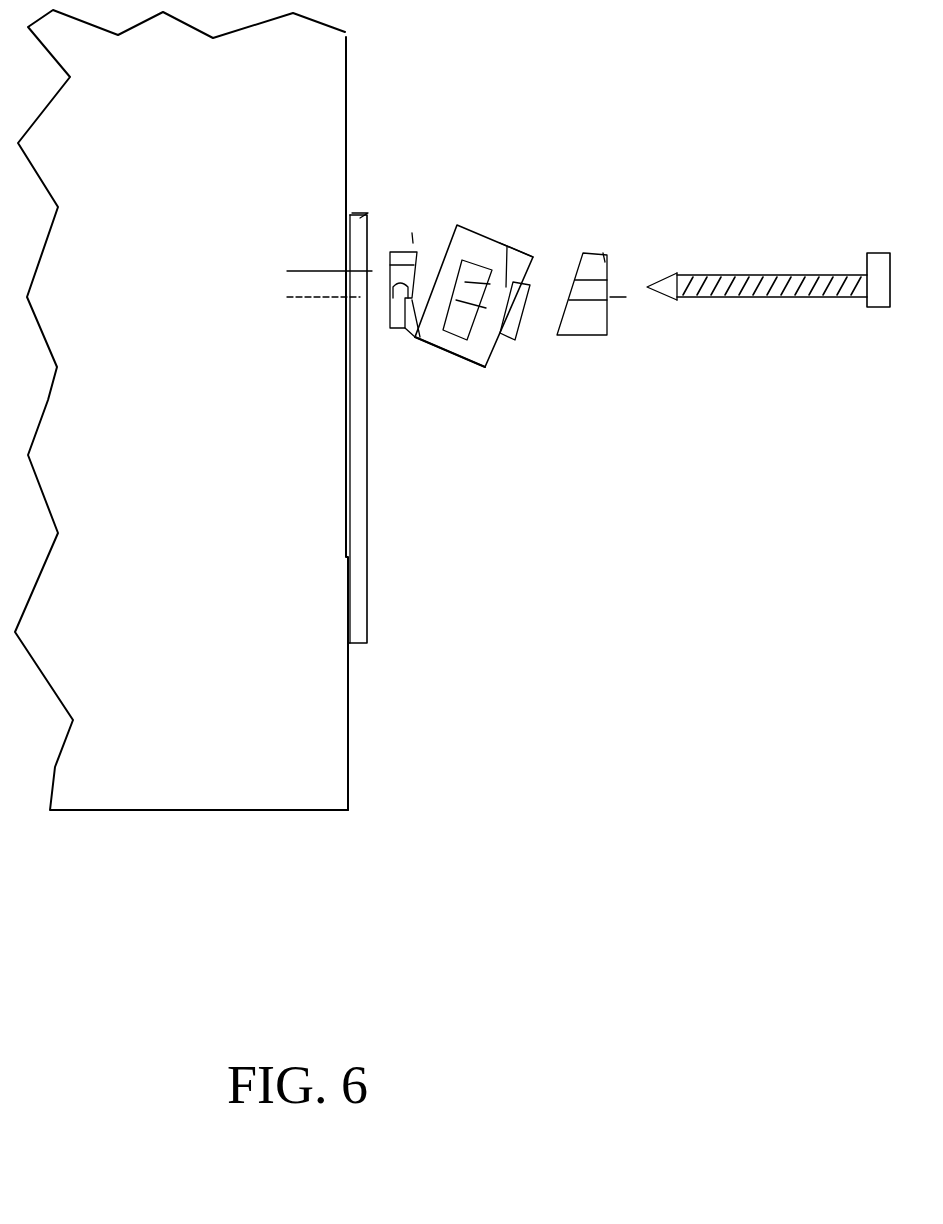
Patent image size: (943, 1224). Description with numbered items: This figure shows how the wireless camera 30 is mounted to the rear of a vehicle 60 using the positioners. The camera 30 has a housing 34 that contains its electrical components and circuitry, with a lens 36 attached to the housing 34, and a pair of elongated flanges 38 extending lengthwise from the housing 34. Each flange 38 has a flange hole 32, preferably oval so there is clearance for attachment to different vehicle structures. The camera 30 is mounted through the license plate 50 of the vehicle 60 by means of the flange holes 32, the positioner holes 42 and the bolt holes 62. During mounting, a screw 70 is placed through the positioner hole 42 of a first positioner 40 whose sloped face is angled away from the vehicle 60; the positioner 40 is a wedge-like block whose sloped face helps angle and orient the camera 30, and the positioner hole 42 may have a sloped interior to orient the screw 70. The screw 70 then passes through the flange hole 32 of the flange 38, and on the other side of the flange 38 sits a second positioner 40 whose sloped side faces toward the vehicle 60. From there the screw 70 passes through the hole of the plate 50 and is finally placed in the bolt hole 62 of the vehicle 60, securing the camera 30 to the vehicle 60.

The wireless camera 30 is at (507, 247).
The flange hole 32 is at (480, 307).
The housing 34 is at (505, 247).
The lens 36 is at (518, 336).
The flange 38 is at (468, 372).
The positioner 40 is at (412, 225).
The positioner hole 42 is at (420, 337).
The license plate 50 is at (355, 498).
The vehicle 60 is at (297, 718).
The bolt hole 62 is at (343, 280).
The screw 70 is at (800, 277).